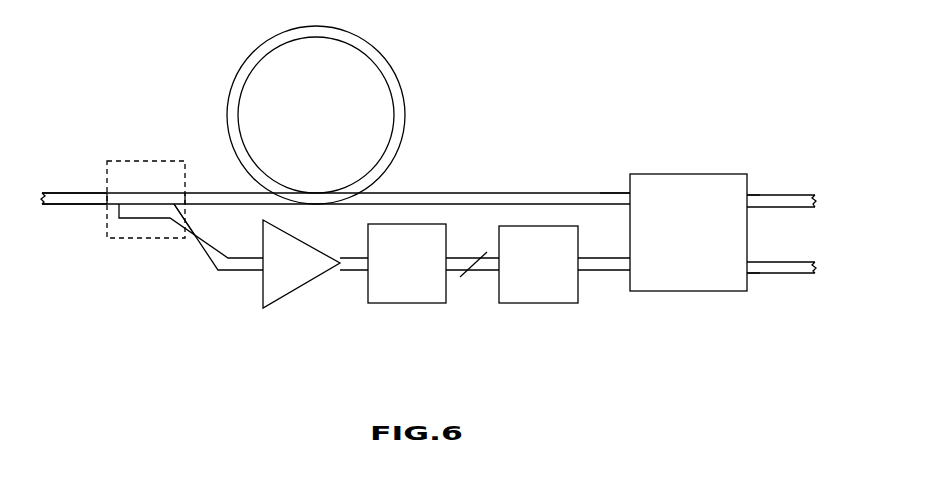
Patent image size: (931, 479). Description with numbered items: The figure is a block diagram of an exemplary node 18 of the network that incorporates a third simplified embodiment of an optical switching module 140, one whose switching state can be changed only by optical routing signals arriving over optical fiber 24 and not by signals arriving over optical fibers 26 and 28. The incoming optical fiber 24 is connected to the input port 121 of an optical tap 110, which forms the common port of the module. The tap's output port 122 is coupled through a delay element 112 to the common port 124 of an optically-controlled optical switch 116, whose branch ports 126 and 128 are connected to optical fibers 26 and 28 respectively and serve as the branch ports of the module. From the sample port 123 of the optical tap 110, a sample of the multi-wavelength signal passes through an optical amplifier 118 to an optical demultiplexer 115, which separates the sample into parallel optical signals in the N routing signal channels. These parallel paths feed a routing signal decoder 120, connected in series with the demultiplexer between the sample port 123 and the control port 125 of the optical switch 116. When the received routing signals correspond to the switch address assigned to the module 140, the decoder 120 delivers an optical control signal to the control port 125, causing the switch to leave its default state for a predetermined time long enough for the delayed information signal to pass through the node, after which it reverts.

The node 18 is at (512, 178).
The optical fiber 24 is at (48, 207).
The optical fiber 26 is at (808, 195).
The optical fiber 28 is at (808, 275).
The optical tap 110 is at (142, 239).
The delay element 112 is at (409, 108).
The optical demultiplexer 115 is at (407, 304).
The optically-controlled optical switch 116 is at (688, 292).
The optical amplifier 118 is at (300, 288).
The routing signal decoder 120 is at (538, 304).
The input port 121 is at (105, 193).
The output port 122 is at (188, 193).
The sample port 123 is at (183, 222).
The common port 124 is at (630, 196).
The control port 125 is at (627, 263).
The branch port 126 is at (748, 195).
The branch port 128 is at (753, 273).
The optical switching module 140 is at (588, 96).